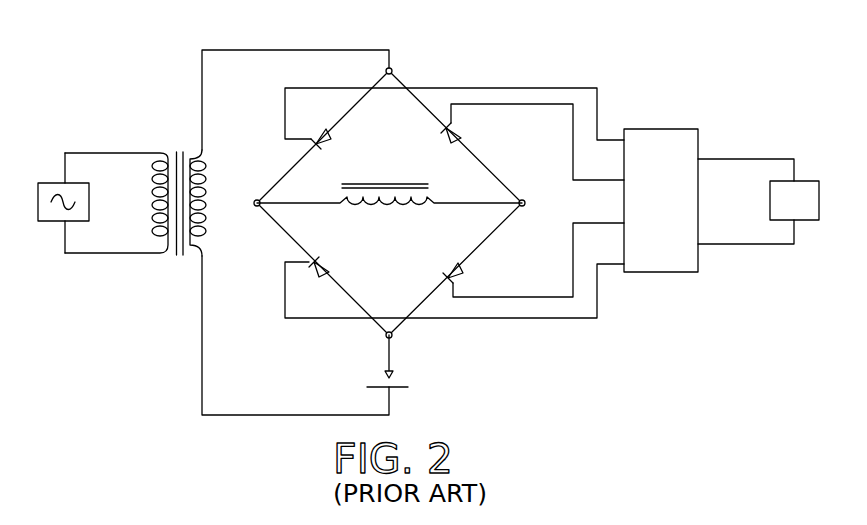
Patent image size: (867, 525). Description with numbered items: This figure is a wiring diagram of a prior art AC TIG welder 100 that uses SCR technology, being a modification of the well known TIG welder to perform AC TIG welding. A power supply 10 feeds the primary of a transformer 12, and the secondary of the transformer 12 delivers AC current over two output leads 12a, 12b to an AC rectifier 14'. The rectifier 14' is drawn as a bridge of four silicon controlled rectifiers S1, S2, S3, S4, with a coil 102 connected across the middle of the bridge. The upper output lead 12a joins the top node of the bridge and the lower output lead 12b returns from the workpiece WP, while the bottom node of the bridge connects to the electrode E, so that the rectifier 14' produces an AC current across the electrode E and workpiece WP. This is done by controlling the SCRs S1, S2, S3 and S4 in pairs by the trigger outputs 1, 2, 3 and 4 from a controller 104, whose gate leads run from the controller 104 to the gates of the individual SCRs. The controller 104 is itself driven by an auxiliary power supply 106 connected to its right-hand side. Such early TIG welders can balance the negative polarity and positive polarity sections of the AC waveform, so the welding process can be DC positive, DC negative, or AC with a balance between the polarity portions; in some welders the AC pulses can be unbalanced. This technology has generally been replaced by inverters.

The power supply 10 is at (48, 222).
The transformer 12 is at (175, 147).
The output lead 12a is at (277, 48).
The output lead 12b is at (257, 417).
The AC rectifier 14' is at (389, 175).
The welder 100 is at (497, 56).
The inductor 102 is at (389, 207).
The controller 104 is at (672, 129).
The auxiliary power supply 106 is at (805, 178).
The trigger output 1 is at (597, 103).
The trigger output 2 is at (572, 235).
The trigger output 3 is at (572, 143).
The trigger output 4 is at (597, 302).
The SCR S1 is at (312, 125).
The SCR S2 is at (471, 274).
The SCR S3 is at (470, 129).
The SCR S4 is at (311, 284).
The electrode E is at (400, 374).
The workpiece WP is at (397, 390).